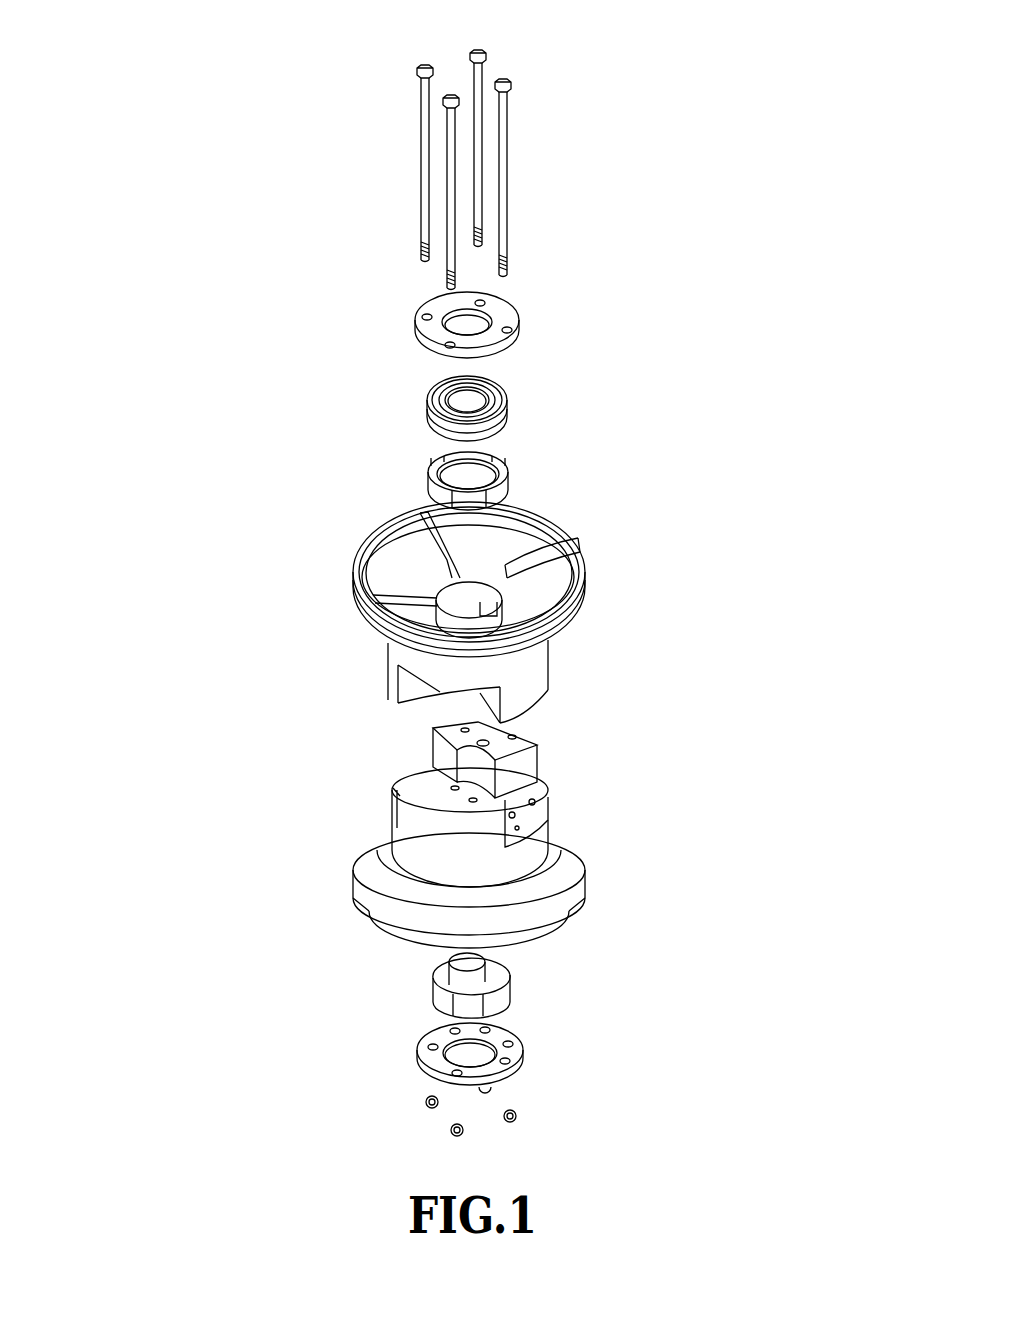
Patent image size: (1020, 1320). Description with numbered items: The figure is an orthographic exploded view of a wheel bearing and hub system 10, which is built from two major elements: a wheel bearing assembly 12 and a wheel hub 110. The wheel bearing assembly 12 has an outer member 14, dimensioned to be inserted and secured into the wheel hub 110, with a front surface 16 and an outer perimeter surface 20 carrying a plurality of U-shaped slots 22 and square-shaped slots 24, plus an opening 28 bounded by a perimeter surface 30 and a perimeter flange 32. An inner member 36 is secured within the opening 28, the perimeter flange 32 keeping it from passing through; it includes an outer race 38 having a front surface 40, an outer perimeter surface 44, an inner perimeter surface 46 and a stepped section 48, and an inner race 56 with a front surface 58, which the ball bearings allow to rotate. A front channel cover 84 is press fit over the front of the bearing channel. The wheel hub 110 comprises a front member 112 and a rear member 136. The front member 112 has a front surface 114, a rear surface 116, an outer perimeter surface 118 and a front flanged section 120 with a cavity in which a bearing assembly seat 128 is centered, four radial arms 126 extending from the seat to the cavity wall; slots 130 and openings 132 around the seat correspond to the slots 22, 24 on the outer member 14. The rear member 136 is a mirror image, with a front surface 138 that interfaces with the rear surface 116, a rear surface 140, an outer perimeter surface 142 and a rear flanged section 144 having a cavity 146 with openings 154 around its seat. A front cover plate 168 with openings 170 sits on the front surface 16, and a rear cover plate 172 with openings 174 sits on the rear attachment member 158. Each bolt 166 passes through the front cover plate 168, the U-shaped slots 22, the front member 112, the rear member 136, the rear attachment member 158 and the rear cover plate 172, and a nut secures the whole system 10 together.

The wheel bearing and hub system 10 is at (140, 60).
The wheel bearing assembly 12 is at (607, 380).
The outer member 14 is at (544, 474).
The front surface 16 is at (505, 477).
The outer perimeter surface 20 is at (485, 462).
The U-shaped slots 22 is at (485, 462).
The square-shaped slots 24 is at (485, 462).
The opening 28 is at (485, 462).
The perimeter surface 30 is at (568, 449).
The perimeter flange 32 is at (544, 449).
The inner member 36 is at (439, 341).
The outer race 38 is at (439, 341).
The front surface 40 is at (439, 341).
The outer perimeter surface 44 is at (427, 412).
The inner perimeter surface 46 is at (498, 341).
The stepped section 48 is at (488, 341).
The inner race 56 is at (498, 341).
The front surface 58 is at (498, 341).
The front channel cover 84 is at (488, 341).
The wheel hub 110 is at (511, 613).
The front member 112 is at (511, 613).
The front surface 114 is at (430, 590).
The rear surface 116 is at (400, 703).
The outer perimeter surface 118 is at (475, 693).
The front flanged section 120 is at (560, 603).
The radial arms 126 is at (415, 537).
The bearing assembly seat 128 is at (654, 533).
The slots 130 is at (417, 577).
The openings 132 is at (573, 587).
The rear member 136 is at (473, 875).
The front surface 138 is at (375, 846).
The rear surface 140 is at (480, 907).
The outer perimeter surface 142 is at (433, 867).
The rear flanged section 144 is at (555, 898).
The cavity 146 is at (473, 762).
The openings 154 is at (437, 768).
The rear attachment member 158 is at (503, 978).
The bolt 166 is at (423, 167).
The front cover plate 168 is at (491, 259).
The openings 170 is at (462, 325).
The rear cover plate 172 is at (534, 1044).
The openings 174 is at (520, 1070).